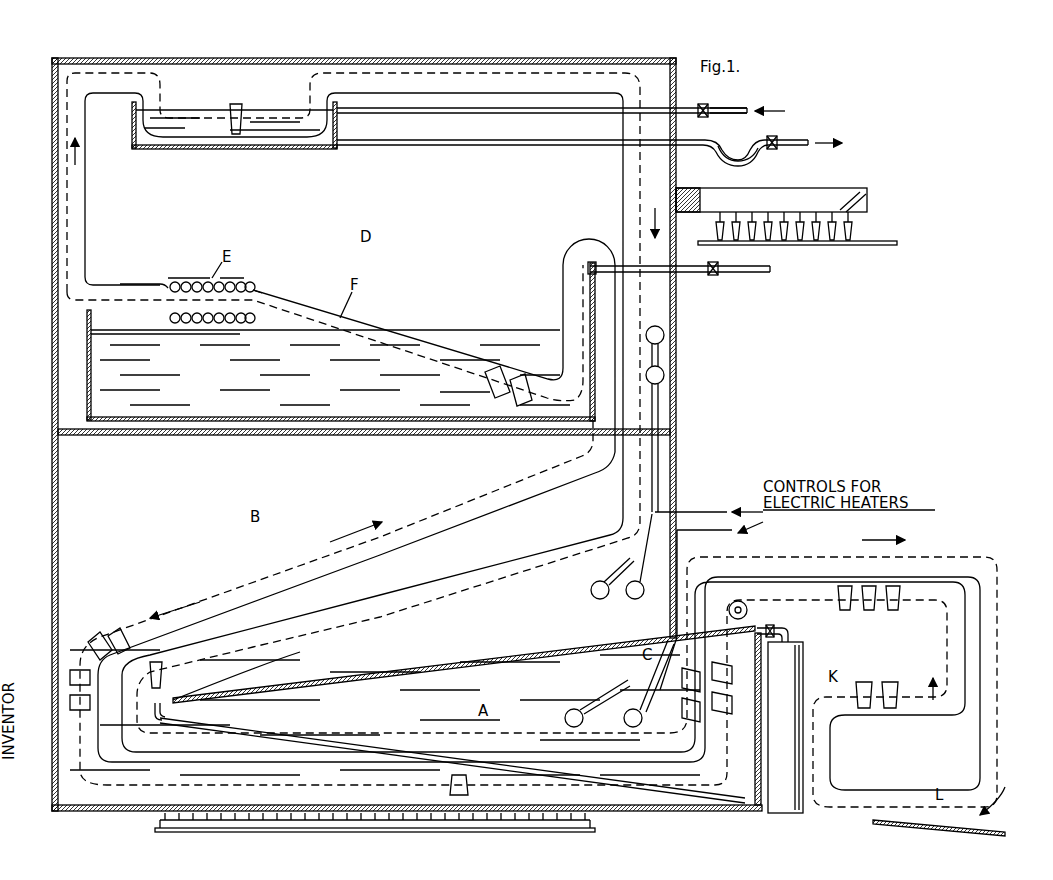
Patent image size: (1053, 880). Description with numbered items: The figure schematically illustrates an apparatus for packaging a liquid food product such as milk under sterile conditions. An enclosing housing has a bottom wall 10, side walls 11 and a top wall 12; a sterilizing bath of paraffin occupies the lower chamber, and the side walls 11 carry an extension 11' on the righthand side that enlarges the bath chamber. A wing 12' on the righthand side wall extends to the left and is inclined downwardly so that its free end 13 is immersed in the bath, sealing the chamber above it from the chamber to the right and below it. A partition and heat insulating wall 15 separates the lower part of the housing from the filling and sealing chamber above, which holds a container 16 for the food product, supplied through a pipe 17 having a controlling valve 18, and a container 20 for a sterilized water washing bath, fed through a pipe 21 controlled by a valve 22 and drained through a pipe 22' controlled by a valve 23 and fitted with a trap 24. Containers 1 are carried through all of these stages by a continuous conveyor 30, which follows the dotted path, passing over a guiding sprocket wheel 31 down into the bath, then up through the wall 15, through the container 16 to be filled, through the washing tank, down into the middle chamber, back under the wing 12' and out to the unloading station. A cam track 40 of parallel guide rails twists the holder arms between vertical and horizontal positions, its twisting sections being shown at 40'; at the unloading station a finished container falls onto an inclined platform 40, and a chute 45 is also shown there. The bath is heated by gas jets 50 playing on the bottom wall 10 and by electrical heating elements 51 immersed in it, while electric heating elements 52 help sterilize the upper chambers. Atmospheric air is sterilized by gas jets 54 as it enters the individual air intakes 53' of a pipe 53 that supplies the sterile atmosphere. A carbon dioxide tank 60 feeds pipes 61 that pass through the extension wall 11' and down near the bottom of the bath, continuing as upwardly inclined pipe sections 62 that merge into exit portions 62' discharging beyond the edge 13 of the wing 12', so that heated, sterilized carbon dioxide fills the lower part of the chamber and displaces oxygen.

The containers 1 is at (236, 104).
The bottom wall 10 is at (98, 811).
The side walls 11 is at (354, 434).
The extension 11' is at (771, 716).
The top wall 12 is at (364, 49).
The wing 12' is at (464, 655).
The free end 13 is at (236, 670).
The partition and heat insulating wall 15 is at (226, 436).
The container 16 is at (87, 322).
The pipe 17 is at (746, 272).
The controlling valve 18 is at (710, 276).
The container 20 is at (170, 150).
The pipe 21 is at (722, 110).
The valve 22 is at (561, 93).
The pipe 22' is at (589, 157).
The valve 23 is at (772, 150).
The trap 24 is at (722, 160).
The continuous conveyor 30 is at (67, 110).
The guiding sprocket wheel 31 is at (745, 602).
The cam track 40 is at (553, 441).
The cam track sections 40' is at (214, 264).
The loading chute 45 is at (980, 832).
The gas jets 50 is at (596, 826).
The electrical heating elements 51 is at (565, 720).
The electric heating elements 52 is at (664, 372).
The pipe 53 is at (771, 179).
The air intakes 53' is at (870, 197).
The gas jets 54 is at (716, 224).
The carbon dioxide tank 60 is at (785, 727).
The pipes 61 is at (790, 628).
The pipe sections 62 is at (452, 754).
The exit portions 62' is at (184, 711).